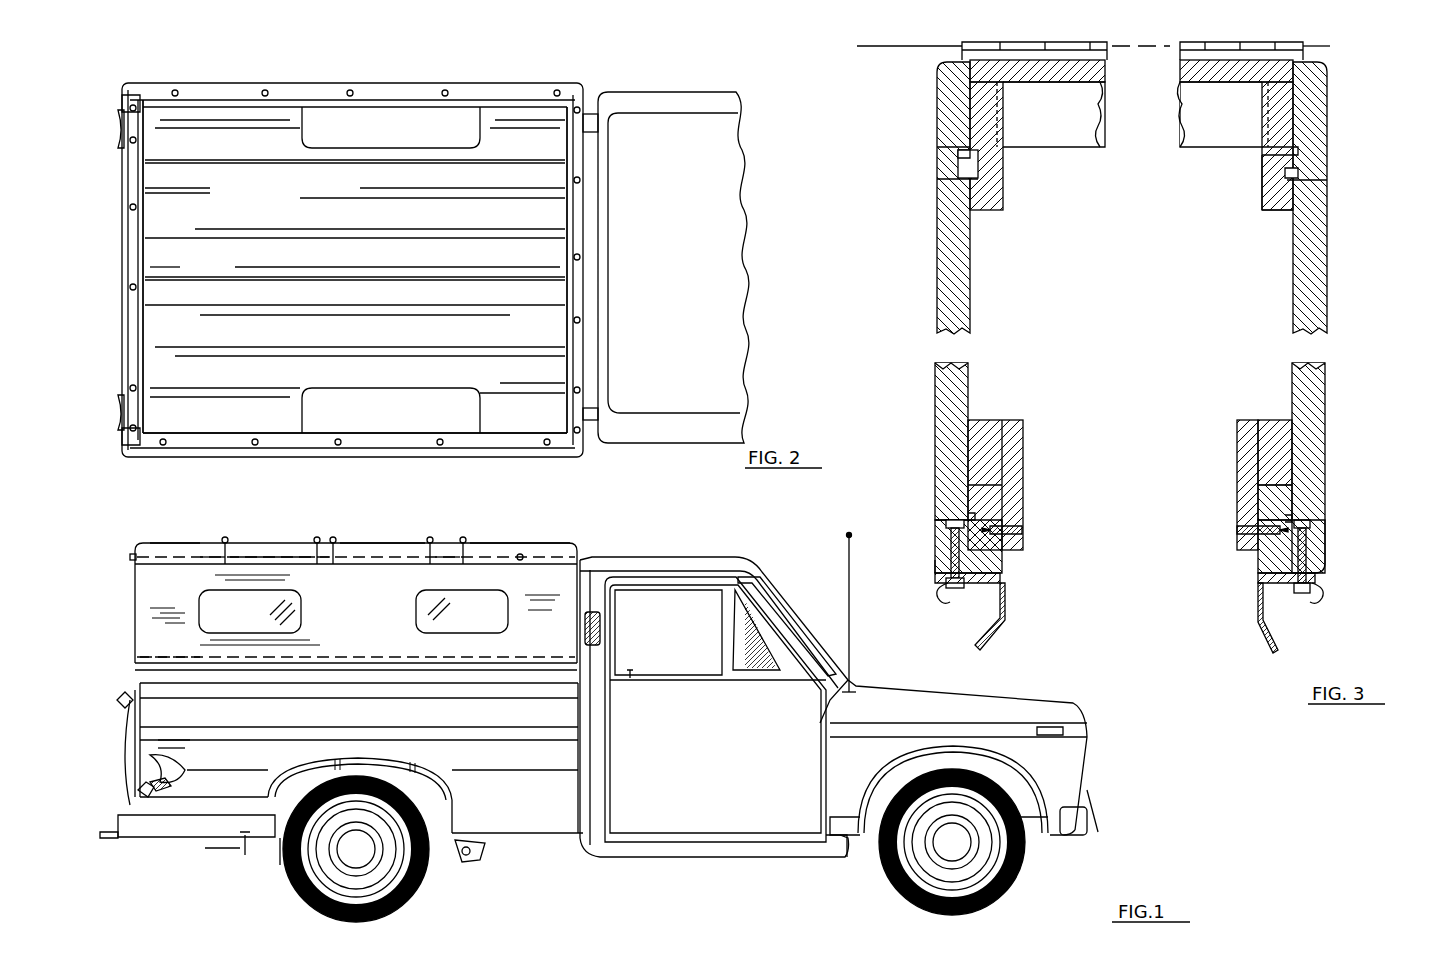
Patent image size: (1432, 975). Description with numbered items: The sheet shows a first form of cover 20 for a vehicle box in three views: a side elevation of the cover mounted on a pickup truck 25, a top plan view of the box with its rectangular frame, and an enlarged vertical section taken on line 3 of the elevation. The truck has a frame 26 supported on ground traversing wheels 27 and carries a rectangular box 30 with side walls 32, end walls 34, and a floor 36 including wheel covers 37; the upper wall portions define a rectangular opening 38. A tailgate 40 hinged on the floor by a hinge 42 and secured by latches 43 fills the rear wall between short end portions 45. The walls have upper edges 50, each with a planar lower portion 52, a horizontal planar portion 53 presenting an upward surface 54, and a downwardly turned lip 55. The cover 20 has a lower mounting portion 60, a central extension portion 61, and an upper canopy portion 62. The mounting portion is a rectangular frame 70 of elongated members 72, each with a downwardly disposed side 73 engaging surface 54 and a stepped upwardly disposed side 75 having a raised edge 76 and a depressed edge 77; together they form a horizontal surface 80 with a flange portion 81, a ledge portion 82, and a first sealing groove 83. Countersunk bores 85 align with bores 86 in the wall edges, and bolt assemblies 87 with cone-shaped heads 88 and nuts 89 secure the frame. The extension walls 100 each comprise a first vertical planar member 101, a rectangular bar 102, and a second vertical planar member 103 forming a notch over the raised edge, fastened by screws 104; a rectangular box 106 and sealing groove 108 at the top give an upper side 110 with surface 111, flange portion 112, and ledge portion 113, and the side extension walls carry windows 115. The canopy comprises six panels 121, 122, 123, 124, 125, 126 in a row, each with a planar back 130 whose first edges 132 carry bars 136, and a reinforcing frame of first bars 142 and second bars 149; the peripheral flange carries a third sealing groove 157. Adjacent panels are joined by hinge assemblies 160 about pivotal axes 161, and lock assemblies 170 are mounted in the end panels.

In FIG. 1, the cover 20 is at (125, 643).
In FIG. 1, the pickup truck 25 is at (1135, 685).
In FIG. 1, the frame 26 is at (440, 780).
In FIG. 1, the ground traversing wheels 27 is at (422, 880).
In FIG. 2, the box 30 is at (598, 70).
In FIG. 1, the box 30 is at (200, 775).
In FIG. 2, the side walls 32 is at (523, 82).
In FIG. 1, the side walls 32 is at (487, 758).
In FIG. 2, the end walls 34 is at (122, 198).
In FIG. 2, the floor 36 is at (370, 263).
In FIG. 1, the floor 36 is at (175, 762).
In FIG. 2, the wheel covers 37 is at (425, 140).
In FIG. 2, the rectangular opening 38 is at (195, 104).
In FIG. 3, the rectangular opening 38 is at (1260, 578).
In FIG. 1, the tailgate 40 is at (130, 718).
In FIG. 1, the hinge 42 is at (148, 795).
In FIG. 2, the latches 43 is at (118, 120).
In FIG. 1, the latches 43 is at (135, 690).
In FIG. 2, the end portions 45 is at (118, 100).
In FIG. 1, the upper edges 50 is at (490, 687).
In FIG. 3, the upper edges 50 is at (1335, 603).
In FIG. 3, the planar lower portion 52 is at (1008, 603).
In FIG. 3, the horizontal planar portion 53 is at (990, 600).
In FIG. 3, the upwardly disposed planar surface 54 is at (1000, 585).
In FIG. 3, the downwardly turned lip 55 is at (920, 588).
In FIG. 1, the mounting portion 60 is at (592, 650).
In FIG. 3, the mounting portion 60 is at (1335, 560).
In FIG. 1, the extension portion 61 is at (600, 565).
In FIG. 3, the extension portion 61 is at (1345, 265).
In FIG. 1, the canopy portion 62 is at (635, 500).
In FIG. 3, the canopy portion 62 is at (1340, 80).
In FIG. 2, the rectangular frame 70 is at (232, 425).
In FIG. 2, the elongated members 72 is at (143, 213).
In FIG. 3, the elongated members 72 is at (1002, 560).
In FIG. 3, the downwardly disposed side 73 is at (1262, 590).
In FIG. 1, the upwardly disposed side 75 is at (165, 657).
In FIG. 3, the upwardly disposed side 75 is at (1292, 522).
In FIG. 3, the raised edge 76 is at (995, 500).
In FIG. 3, the depressed edge 77 is at (955, 498).
In FIG. 2, the horizontal surface 80 is at (385, 115).
In FIG. 2, the flange portion 81 is at (305, 88).
In FIG. 2, the ledge portion 82 is at (250, 85).
In FIG. 3, the first sealing groove 83 is at (1275, 518).
In FIG. 3, the bores 85 is at (945, 532).
In FIG. 3, the bores 86 is at (945, 575).
In FIG. 2, the bolt assemblies 87 is at (365, 95).
In FIG. 3, the bolt assemblies 87 is at (945, 520).
In FIG. 3, the cone-shaped heads 88 is at (1310, 530).
In FIG. 3, the nuts 89 is at (1300, 595).
In FIG. 3, the extension walls 100 is at (972, 283).
In FIG. 1, the first vertical planar member 101 is at (398, 621).
In FIG. 3, the first vertical planar member 101 is at (970, 372).
In FIG. 3, the rectangular bar 102 is at (1283, 420).
In FIG. 3, the second vertical planar member 103 is at (1240, 440).
In FIG. 3, the screws 104 is at (1240, 528).
In FIG. 3, the rectangular box 106 is at (1275, 210).
In FIG. 3, the sealing groove 108 is at (1275, 188).
In FIG. 3, the upper side 110 is at (1300, 170).
In FIG. 1, the upwardly disposed surface 111 is at (200, 555).
In FIG. 3, the flange portion 112 is at (1275, 163).
In FIG. 3, the ledge portion 113 is at (1320, 172).
In FIG. 1, the windows 115 is at (262, 620).
In FIG. 1, the panel 121 is at (165, 548).
In FIG. 1, the panel 122 is at (282, 560).
In FIG. 1, the panel 123 is at (323, 560).
In FIG. 1, the panel 124 is at (368, 545).
In FIG. 1, the panel 125 is at (445, 560).
In FIG. 1, the panel 126 is at (488, 545).
In FIG. 3, the planar back 130 is at (1210, 92).
In FIG. 3, the first edges 132 is at (968, 72).
In FIG. 3, the bars 136 is at (950, 146).
In FIG. 3, the first bars 142 is at (975, 162).
In FIG. 3, the second bars 149 is at (996, 120).
In FIG. 3, the third sealing groove 157 is at (1310, 122).
In FIG. 1, the hinge assembly 160 is at (225, 540).
In FIG. 3, the hinge assembly 160 is at (1285, 42).
In FIG. 3, the pivotal axis 161 is at (866, 52).
In FIG. 1, the lock assemblies 170 is at (130, 567).
In FIG. 1, the section line 3— 3 is at (357, 690).